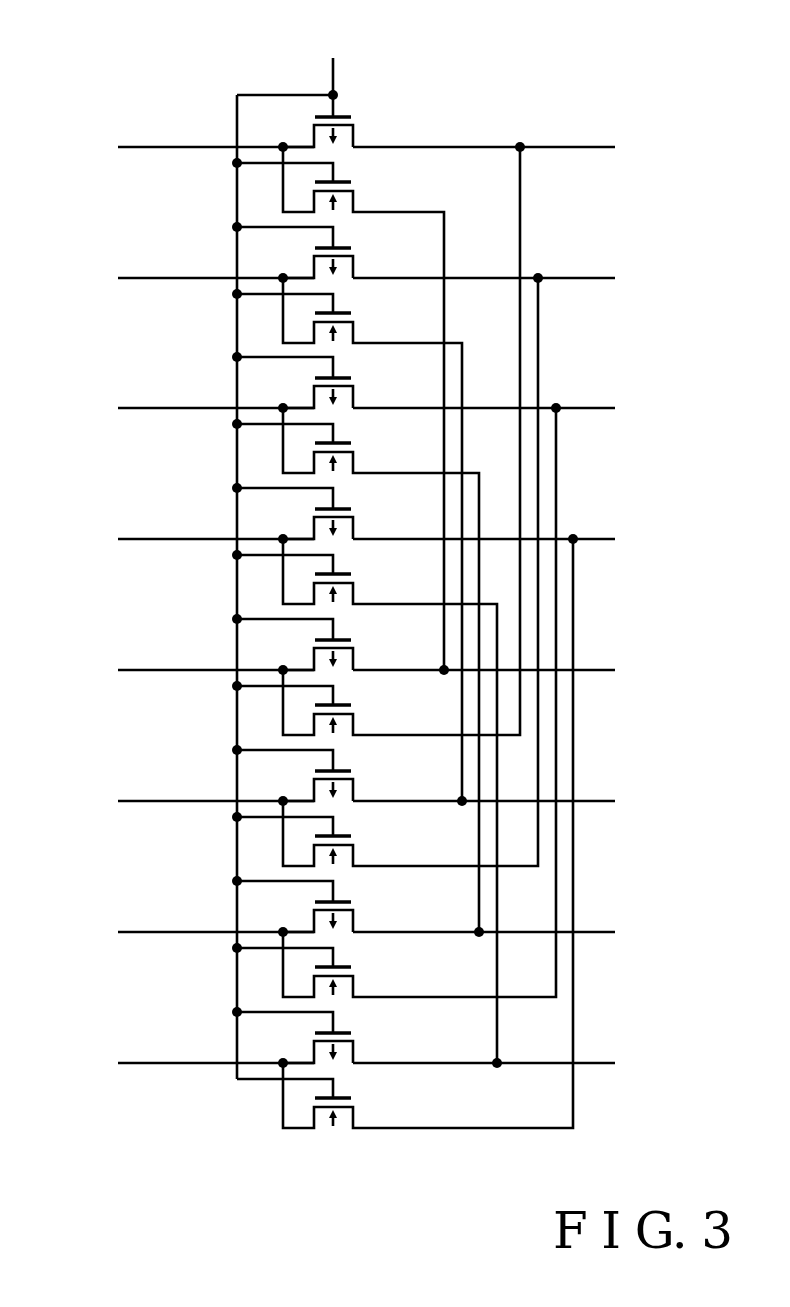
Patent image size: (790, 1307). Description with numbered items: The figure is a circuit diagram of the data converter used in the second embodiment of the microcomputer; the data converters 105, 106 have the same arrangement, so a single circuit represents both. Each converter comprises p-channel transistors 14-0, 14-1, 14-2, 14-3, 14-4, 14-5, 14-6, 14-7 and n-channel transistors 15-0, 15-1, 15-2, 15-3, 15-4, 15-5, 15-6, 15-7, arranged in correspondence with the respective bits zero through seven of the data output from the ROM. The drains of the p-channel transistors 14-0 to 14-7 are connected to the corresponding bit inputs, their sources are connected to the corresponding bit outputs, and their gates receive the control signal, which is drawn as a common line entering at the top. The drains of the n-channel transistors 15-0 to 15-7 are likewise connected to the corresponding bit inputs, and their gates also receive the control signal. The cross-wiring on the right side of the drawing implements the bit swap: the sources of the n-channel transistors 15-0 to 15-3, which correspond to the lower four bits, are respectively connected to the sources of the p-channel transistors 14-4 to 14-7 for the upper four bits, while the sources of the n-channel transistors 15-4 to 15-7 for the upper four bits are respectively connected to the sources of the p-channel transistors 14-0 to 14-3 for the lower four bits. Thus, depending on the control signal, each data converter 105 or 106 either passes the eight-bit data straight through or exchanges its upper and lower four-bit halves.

The p-channel transistor 14-0 is at (355, 118).
The p-channel transistor 14-1 is at (353, 251).
The p-channel transistor 14-2 is at (353, 381).
The p-channel transistor 14-3 is at (353, 512).
The p-channel transistor 14-4 is at (353, 639).
The p-channel transistor 14-5 is at (353, 771).
The p-channel transistor 14-6 is at (353, 905).
The p-channel transistor 14-7 is at (353, 1035).
The n-channel transistor 15-0 is at (353, 179).
The n-channel transistor 15-1 is at (353, 315).
The n-channel transistor 15-2 is at (353, 446).
The n-channel transistor 15-3 is at (353, 580).
The n-channel transistor 15-4 is at (353, 714).
The n-channel transistor 15-5 is at (353, 847).
The n-channel transistor 15-6 is at (353, 979).
The n-channel transistor 15-7 is at (353, 1114).
The data converter 105 is at (558, 114).
The data converter 106 is at (372, 576).